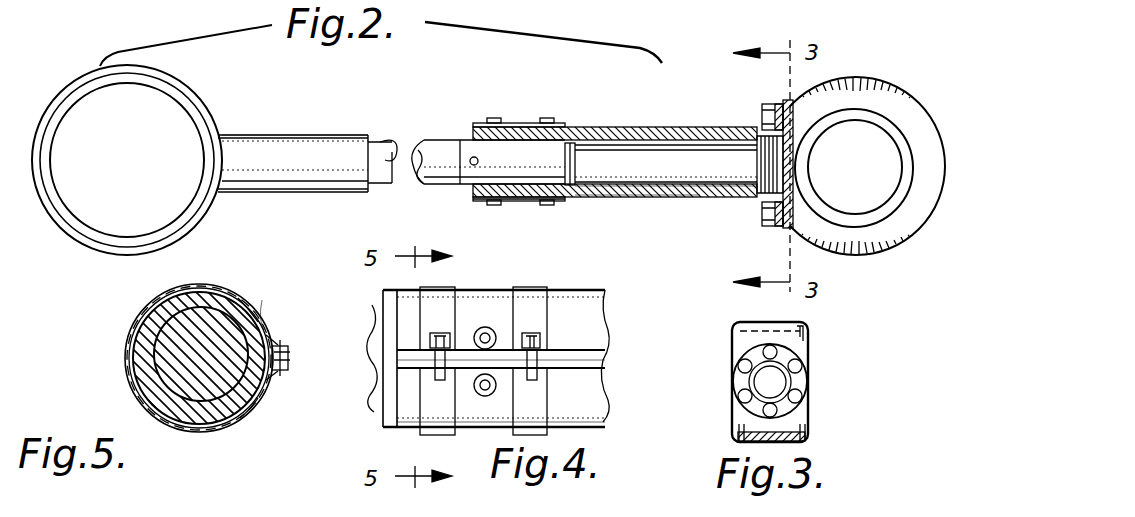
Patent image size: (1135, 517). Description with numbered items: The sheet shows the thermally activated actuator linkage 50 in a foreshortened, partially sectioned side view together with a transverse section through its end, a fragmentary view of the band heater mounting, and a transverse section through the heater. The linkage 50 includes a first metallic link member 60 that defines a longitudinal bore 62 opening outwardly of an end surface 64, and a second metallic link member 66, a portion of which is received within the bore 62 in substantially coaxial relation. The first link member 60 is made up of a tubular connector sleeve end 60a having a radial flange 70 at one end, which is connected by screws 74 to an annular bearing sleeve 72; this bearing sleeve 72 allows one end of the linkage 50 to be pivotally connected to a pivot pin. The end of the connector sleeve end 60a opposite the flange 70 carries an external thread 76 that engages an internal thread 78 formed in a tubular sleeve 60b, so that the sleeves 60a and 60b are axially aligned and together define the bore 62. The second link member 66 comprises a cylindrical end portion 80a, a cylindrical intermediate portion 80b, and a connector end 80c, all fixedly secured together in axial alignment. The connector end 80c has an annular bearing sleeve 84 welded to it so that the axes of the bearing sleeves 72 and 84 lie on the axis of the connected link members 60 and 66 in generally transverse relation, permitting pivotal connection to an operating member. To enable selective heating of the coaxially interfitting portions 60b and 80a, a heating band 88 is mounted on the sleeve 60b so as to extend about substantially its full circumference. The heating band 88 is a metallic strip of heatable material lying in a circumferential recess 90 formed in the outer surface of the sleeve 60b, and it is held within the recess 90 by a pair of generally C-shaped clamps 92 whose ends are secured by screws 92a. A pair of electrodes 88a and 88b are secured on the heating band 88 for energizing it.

In FIG. 2, the thermally activated actuator linkage 50 is at (86, 68).
In FIG. 2, the annular bearing sleeve 84 is at (90, 250).
In FIG. 3, the annular bearing sleeve 84 is at (756, 322).
In FIG. 2, the connector end 80c is at (250, 172).
In FIG. 2, the second metallic link member 66 is at (335, 100).
In FIG. 2, the cylindrical intermediate portion 80b is at (420, 172).
In FIG. 2, the cylindrical end portion 80a is at (460, 140).
In FIG. 5, the cylindrical end portion 80a is at (138, 360).
In FIG. 4, the cylindrical end portion 80a is at (375, 330).
In FIG. 2, the tubular sleeve 60b is at (590, 126).
In FIG. 5, the tubular sleeve 60b is at (134, 385).
In FIG. 4, the tubular sleeve 60b is at (590, 300).
In FIG. 2, the circumferential recess 90 is at (520, 123).
In FIG. 2, the C-shaped clamps 92 is at (500, 100).
In FIG. 5, the C-shaped clamps 92 is at (255, 292).
In FIG. 4, the C-shaped clamps 92 is at (440, 287).
In FIG. 2, the end surface 64 is at (486, 203).
In FIG. 2, the heating band 88 is at (535, 203).
In FIG. 5, the heating band 88 is at (208, 432).
In FIG. 4, the heating band 88 is at (490, 420).
In FIG. 2, the longitudinal bore 62 is at (586, 195).
In FIG. 3, the longitudinal bore 62 is at (762, 382).
In FIG. 2, the tubular connector sleeve end 60a is at (682, 128).
In FIG. 2, the first metallic link member 60 is at (646, 116).
In FIG. 2, the radial flange 70 is at (786, 100).
In FIG. 3, the radial flange 70 is at (790, 414).
In FIG. 2, the screws 74 is at (762, 112).
In FIG. 2, the external thread 76 is at (625, 198).
In FIG. 2, the internal thread 78 is at (632, 212).
In FIG. 2, the annular bearing sleeve 72 is at (890, 52).
In FIG. 5, the screws 92a is at (292, 362).
In FIG. 4, the screws 92a is at (540, 360).
In FIG. 5, the electrode 88a is at (268, 320).
In FIG. 4, the electrode 88a is at (488, 327).
In FIG. 5, the electrode 88b is at (268, 412).
In FIG. 4, the electrode 88b is at (478, 395).